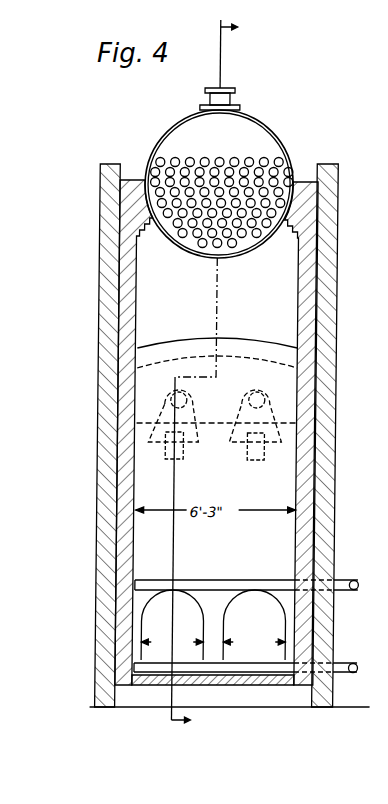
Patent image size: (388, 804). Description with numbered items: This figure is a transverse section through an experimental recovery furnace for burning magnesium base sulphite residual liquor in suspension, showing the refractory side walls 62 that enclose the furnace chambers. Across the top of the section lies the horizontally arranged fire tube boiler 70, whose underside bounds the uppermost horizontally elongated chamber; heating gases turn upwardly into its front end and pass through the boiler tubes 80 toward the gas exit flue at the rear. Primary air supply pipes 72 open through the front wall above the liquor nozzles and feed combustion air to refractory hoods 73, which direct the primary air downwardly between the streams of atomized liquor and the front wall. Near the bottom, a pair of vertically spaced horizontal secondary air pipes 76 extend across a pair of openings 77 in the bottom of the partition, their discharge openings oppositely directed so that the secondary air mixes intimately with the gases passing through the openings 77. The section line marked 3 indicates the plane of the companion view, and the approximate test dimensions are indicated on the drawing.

The section line 3- 3 is at (212, 377).
The side walls 62 is at (102, 540).
The fire tube boiler 70 is at (241, 253).
The primary air supply pipes 72 is at (191, 395).
The refractory hoods 73 is at (246, 420).
The secondary air pipes 76 is at (357, 593).
The openings 77 is at (213, 625).
The boiler tubes 80 is at (222, 157).